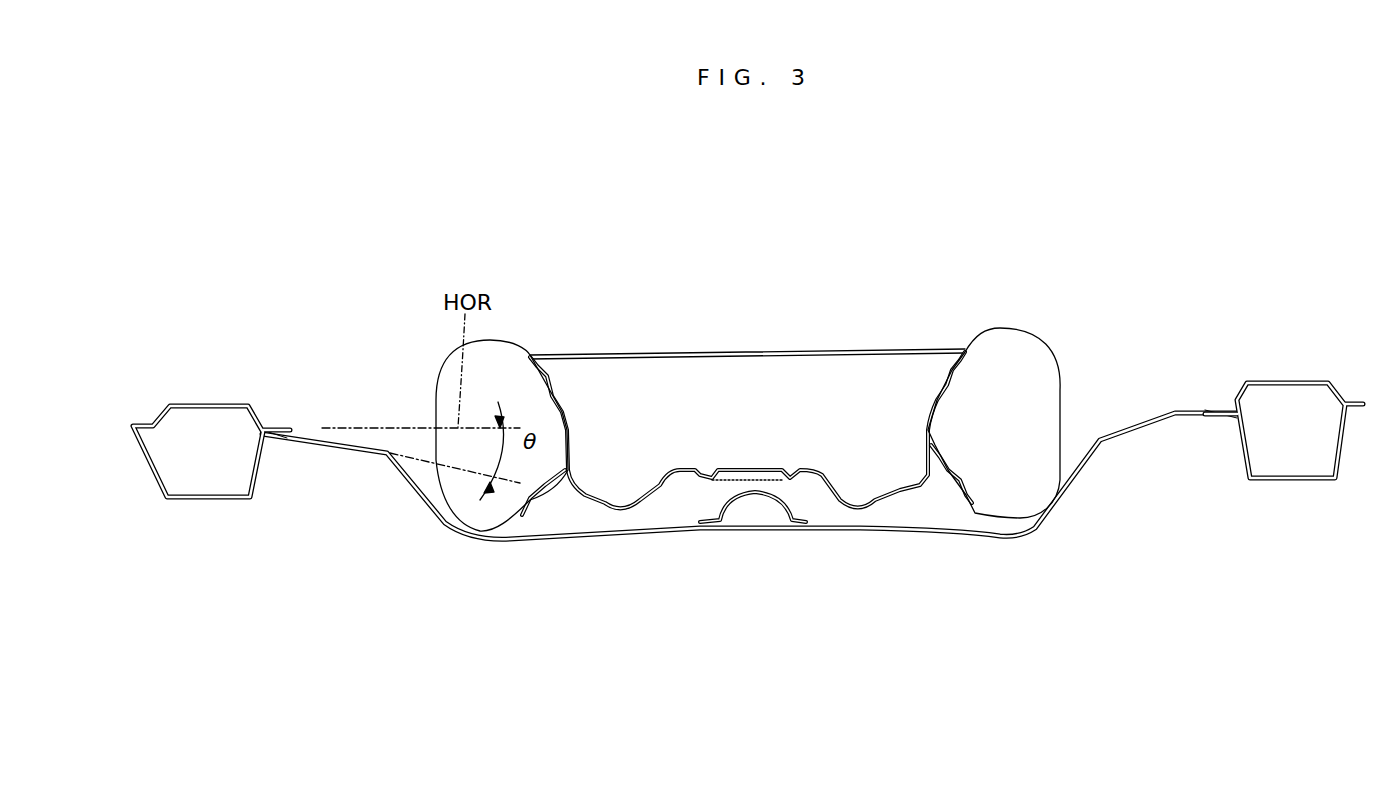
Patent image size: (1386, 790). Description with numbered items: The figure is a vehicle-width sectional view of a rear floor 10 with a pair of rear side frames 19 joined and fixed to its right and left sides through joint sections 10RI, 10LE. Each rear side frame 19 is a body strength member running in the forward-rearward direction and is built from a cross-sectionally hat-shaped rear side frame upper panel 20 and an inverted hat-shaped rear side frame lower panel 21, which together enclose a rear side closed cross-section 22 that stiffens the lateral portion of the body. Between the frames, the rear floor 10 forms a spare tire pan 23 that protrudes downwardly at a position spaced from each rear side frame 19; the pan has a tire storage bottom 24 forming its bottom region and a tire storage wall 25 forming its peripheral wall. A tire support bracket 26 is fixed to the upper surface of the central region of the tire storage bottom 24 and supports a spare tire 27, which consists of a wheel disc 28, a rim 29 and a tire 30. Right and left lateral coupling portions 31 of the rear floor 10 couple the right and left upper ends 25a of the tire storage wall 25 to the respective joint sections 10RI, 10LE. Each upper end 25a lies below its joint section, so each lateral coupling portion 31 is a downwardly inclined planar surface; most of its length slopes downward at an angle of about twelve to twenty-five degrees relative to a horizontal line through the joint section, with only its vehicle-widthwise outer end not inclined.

The rear floor 10 is at (1157, 402).
The joint section 10LE is at (284, 444).
The joint section 10RI is at (1224, 420).
The rear side frame 19 is at (181, 394).
The rear side frame upper panel 20 is at (213, 402).
The rear side frame lower panel 21 is at (193, 502).
The rear side closed cross-section 22 is at (190, 464).
The spare tire pan 23 is at (663, 537).
The tire storage bottom 24 is at (833, 533).
The tire storage wall 25 is at (408, 488).
The upper end 25a is at (395, 446).
The tire support bracket 26 is at (765, 488).
The spare tire 27 is at (864, 350).
The wheel disc 28 is at (825, 467).
The rim 29 is at (938, 376).
The tire 30 is at (1020, 327).
The lateral coupling portion 31 is at (360, 438).